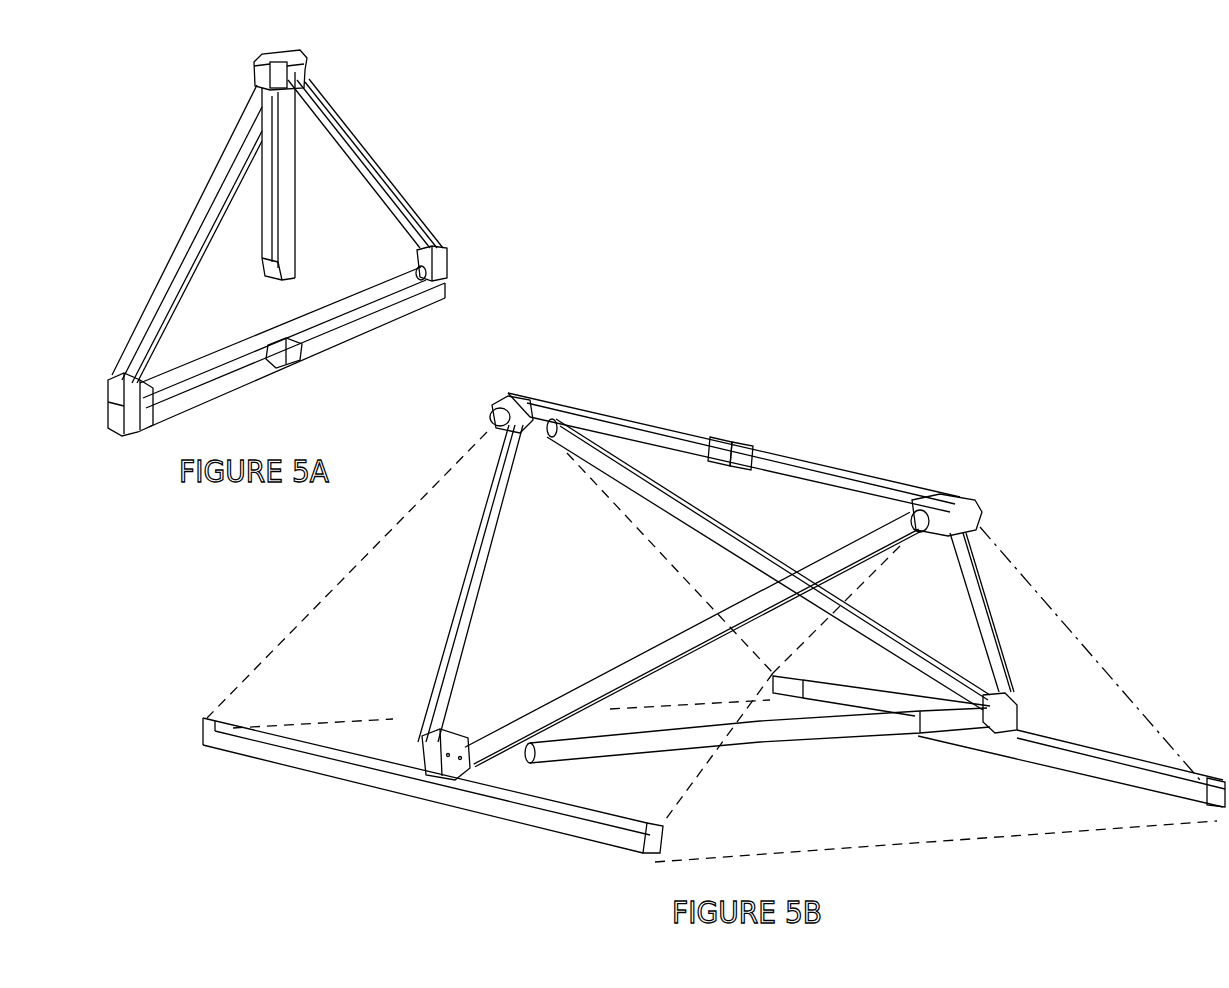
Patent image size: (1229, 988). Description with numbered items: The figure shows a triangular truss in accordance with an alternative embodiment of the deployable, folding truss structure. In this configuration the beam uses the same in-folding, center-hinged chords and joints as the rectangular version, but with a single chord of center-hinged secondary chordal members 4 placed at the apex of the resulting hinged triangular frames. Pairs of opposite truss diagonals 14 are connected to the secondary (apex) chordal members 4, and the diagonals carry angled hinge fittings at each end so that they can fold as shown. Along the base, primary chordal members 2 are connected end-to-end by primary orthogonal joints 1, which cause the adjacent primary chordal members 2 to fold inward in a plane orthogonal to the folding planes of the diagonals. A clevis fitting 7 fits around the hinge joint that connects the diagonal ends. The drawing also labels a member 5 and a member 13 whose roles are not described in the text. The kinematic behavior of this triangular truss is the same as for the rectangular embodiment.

In FIG. 5B, the primary orthogonal joint 1 is at (430, 793).
In FIG. 5B, the primary chordal member 2 is at (333, 773).
In FIG. 5B, the secondary chordal member 4 is at (817, 467).
In FIG. 5B, the tube 5 is at (813, 733).
In FIG. 5A, the clevis fitting 7 is at (112, 408).
In FIG. 5A, the center strut 13 is at (298, 217).
In FIG. 5A, the truss diagonal 14 is at (393, 188).
In FIG. 5B, the truss diagonal 14 is at (634, 663).